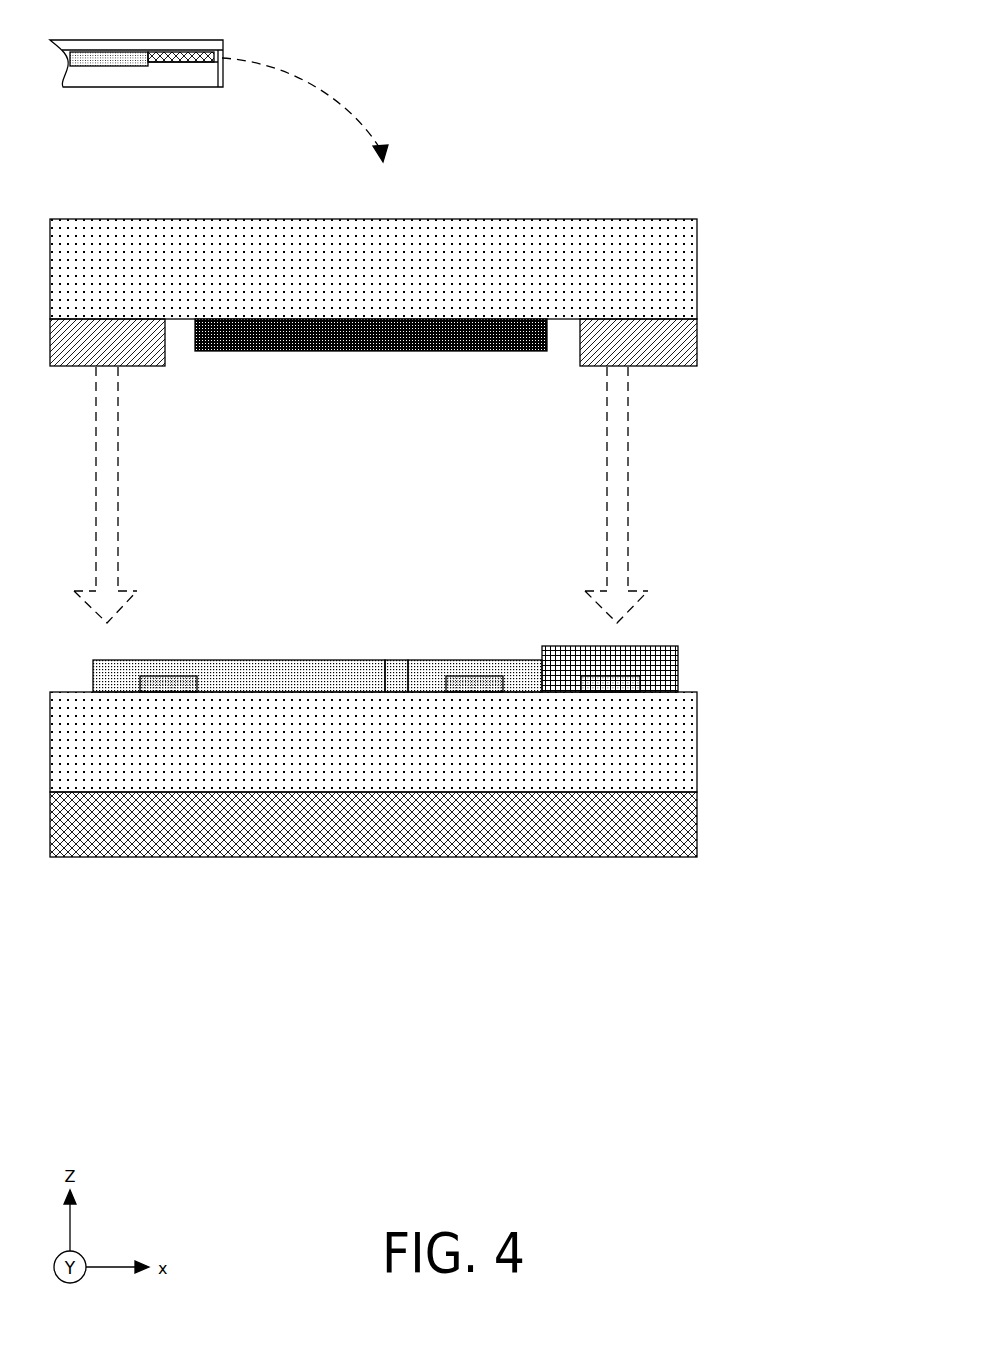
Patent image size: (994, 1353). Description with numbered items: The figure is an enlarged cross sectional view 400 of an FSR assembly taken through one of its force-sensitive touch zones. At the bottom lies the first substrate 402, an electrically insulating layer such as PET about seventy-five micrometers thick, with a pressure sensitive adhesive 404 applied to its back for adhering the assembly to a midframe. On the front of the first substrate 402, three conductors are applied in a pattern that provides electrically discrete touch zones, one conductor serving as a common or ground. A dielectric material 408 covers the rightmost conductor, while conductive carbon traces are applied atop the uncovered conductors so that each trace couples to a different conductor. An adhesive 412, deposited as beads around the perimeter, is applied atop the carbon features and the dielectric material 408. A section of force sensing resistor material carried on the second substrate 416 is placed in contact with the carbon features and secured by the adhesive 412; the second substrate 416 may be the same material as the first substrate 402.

The enlarged cross sectional view 400 is at (712, 53).
The first substrate 402 is at (287, 752).
The pressure sensitive adhesive 404 is at (373, 820).
The dielectric material 408 is at (585, 646).
The adhesive 412 is at (143, 367).
The second substrate 416 is at (445, 240).